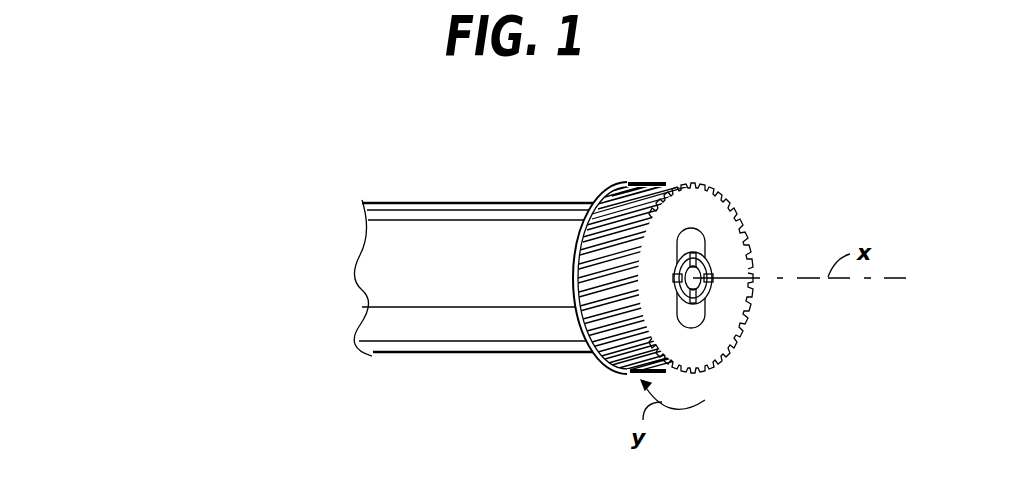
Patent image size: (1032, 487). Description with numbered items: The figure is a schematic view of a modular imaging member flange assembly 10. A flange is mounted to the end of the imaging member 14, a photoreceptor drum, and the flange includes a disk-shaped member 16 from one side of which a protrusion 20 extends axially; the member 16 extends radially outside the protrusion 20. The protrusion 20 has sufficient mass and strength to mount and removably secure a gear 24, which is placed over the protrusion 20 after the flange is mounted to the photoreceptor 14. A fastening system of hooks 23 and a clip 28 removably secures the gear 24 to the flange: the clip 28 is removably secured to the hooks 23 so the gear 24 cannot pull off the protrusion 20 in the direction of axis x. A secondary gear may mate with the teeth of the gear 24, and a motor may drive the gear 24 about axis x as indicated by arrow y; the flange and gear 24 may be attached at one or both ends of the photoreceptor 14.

The modular imaging member flange assembly 10 is at (716, 134).
The imaging member 14 is at (447, 212).
The member 16 is at (604, 198).
The protrusion 20 is at (696, 236).
The hooks 23 is at (707, 290).
The gear 24 is at (731, 254).
The clip 28 is at (678, 287).